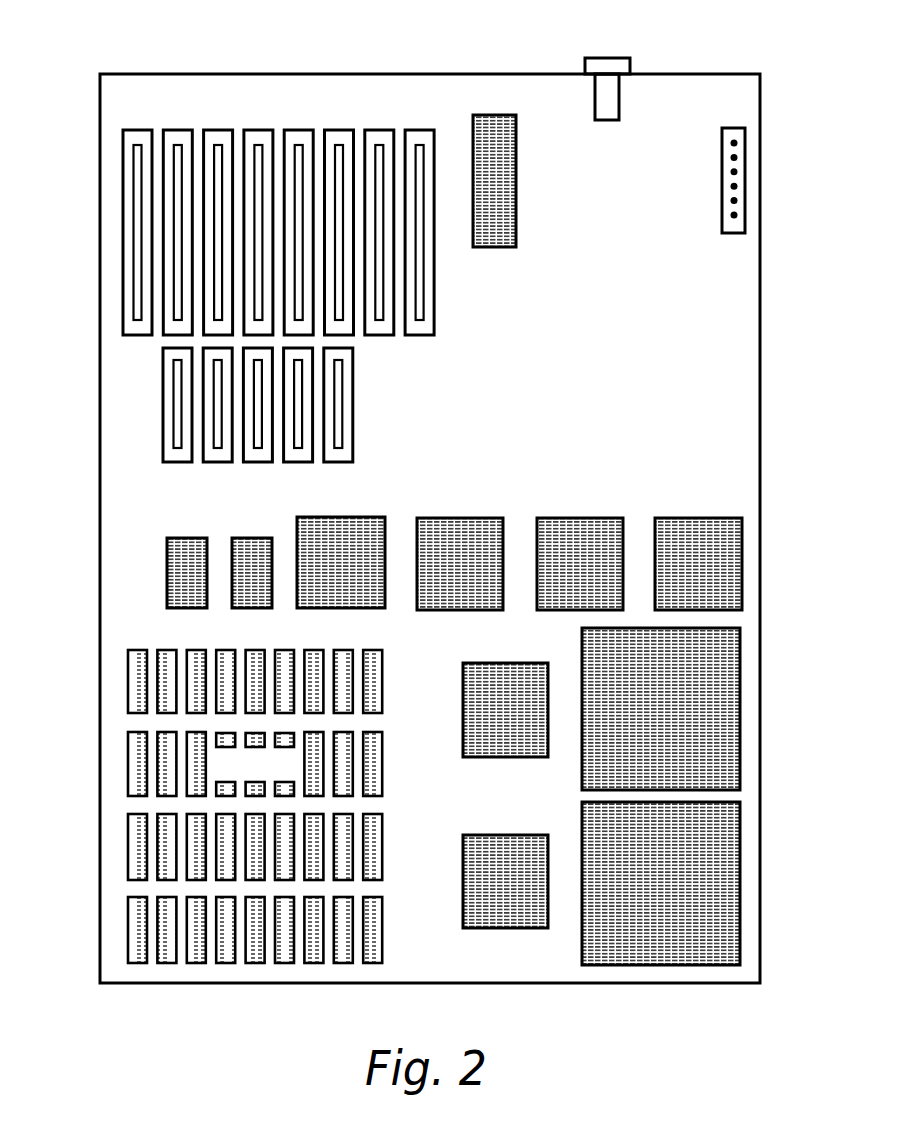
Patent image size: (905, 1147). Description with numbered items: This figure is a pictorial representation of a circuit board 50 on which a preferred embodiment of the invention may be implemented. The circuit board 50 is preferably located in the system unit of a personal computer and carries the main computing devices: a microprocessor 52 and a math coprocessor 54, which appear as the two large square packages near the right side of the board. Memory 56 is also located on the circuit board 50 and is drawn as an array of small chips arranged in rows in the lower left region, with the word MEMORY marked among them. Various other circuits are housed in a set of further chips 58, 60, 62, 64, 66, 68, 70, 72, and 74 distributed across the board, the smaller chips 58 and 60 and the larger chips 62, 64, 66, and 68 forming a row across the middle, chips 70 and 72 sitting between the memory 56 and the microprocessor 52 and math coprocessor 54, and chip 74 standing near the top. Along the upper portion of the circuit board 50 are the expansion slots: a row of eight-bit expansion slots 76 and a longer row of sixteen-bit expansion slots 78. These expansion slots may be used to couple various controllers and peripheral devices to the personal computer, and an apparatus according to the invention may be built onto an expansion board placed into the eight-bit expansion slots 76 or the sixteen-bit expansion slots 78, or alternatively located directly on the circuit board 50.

The circuit board 50 is at (298, 48).
The microprocessor 52 is at (720, 673).
The math coprocessor 54 is at (720, 847).
The memory 56 is at (108, 933).
The chip 58 is at (183, 540).
The chip 60 is at (248, 540).
The chip 62 is at (337, 525).
The chip 64 is at (455, 525).
The chip 66 is at (575, 528).
The chip 68 is at (690, 525).
The chip 70 is at (512, 668).
The chip 72 is at (512, 838).
The chip 74 is at (516, 186).
The 8 bit expansion slots 76 is at (420, 386).
The 16 bit expansion slots 78 is at (333, 108).